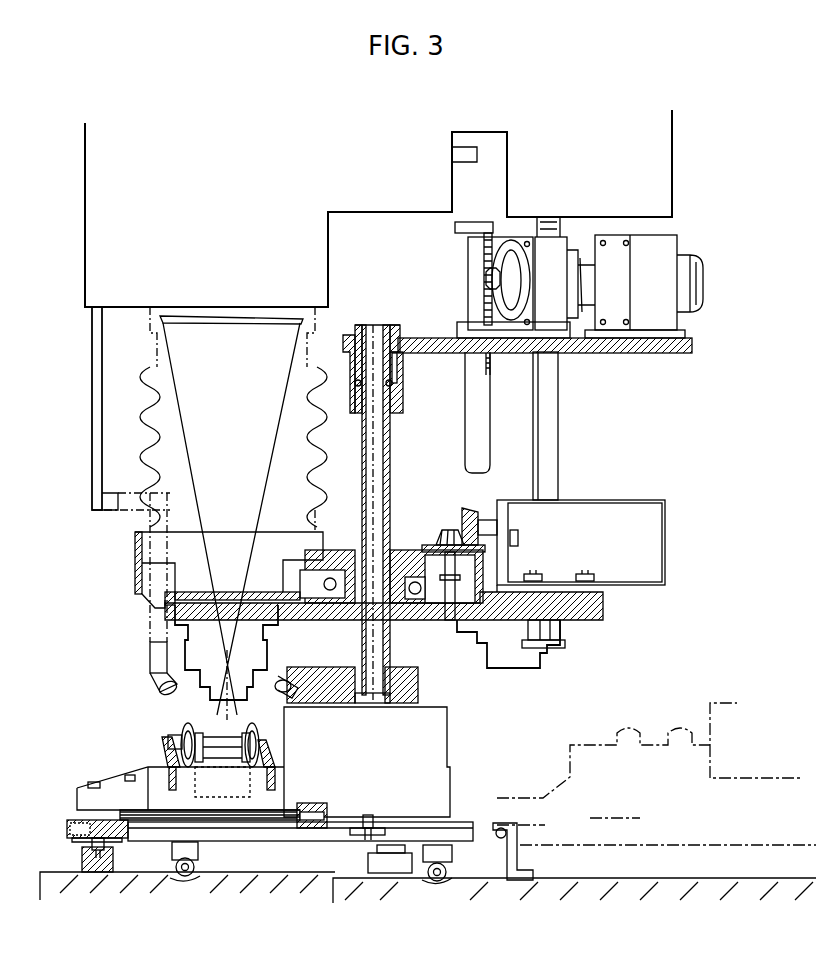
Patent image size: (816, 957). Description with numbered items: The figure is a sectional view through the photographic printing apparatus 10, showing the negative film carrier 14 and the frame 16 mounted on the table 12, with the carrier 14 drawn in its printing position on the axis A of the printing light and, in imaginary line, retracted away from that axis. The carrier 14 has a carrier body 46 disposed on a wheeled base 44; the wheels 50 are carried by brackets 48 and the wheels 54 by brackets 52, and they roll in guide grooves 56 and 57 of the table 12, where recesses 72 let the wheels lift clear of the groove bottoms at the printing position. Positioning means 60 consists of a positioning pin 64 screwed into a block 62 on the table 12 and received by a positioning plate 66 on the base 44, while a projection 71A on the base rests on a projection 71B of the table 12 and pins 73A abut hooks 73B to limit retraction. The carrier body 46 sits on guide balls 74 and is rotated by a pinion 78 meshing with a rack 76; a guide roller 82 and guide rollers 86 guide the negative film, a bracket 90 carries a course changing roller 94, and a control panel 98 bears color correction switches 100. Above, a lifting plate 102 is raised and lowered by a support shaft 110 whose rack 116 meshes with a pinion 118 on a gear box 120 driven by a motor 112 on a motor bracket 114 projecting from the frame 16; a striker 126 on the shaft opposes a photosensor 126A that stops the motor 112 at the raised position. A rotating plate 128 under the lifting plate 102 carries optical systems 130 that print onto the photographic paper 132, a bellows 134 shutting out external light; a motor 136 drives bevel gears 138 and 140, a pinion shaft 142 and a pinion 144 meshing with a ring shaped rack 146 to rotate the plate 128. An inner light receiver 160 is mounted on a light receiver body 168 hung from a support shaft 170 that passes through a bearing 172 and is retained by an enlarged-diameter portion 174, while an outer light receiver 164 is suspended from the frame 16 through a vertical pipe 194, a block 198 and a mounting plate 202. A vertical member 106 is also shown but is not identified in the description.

The photographic printing apparatus 10 is at (743, 210).
The table 12 is at (40, 885).
The negative film carrier 14 is at (473, 727).
The frame 16 is at (672, 152).
The wheeled base 44 is at (77, 798).
The carrier body 46 is at (450, 790).
The brackets 48 is at (196, 858).
The wheels 50 is at (178, 875).
The brackets 52 is at (450, 860).
The wheels 54 is at (462, 890).
The groove 56 is at (280, 841).
The groove 57 is at (548, 880).
The positioning means 60 is at (58, 852).
The block 62 is at (116, 880).
The positioning pin 64 is at (72, 840).
The positioning plate 66 is at (113, 843).
The projection 71A is at (378, 852).
The projection 71B is at (400, 874).
The recesses 72 is at (192, 882).
The pins 73A is at (67, 822).
The hooks 73B is at (520, 882).
The guide balls 74 is at (340, 797).
The rack 76 is at (372, 815).
The pinion 78 is at (352, 835).
The guide roller 82 is at (214, 733).
The guide rollers 86 is at (190, 785).
The bracket 90 is at (275, 762).
The course changing roller 94 is at (170, 732).
The control panel 98 is at (120, 774).
The color correction switches 100 is at (90, 780).
The lifting plate 102 is at (603, 606).
The column 106 is at (558, 428).
The support shaft 110 is at (465, 432).
The motor 112 is at (672, 236).
The motor bracket 114 is at (632, 354).
The rack 116 is at (484, 252).
The pinion 118 is at (500, 262).
The gear box 120 is at (560, 237).
The striker 126 is at (478, 222).
The photosensor 126A is at (477, 154).
The rotating plate 128 is at (430, 603).
The optical systems 130 is at (278, 636).
The photographic paper 132 is at (287, 316).
The bellows 134 is at (307, 453).
The motor 136 is at (630, 500).
The bevel gear 138 is at (466, 510).
The bevel gear 140 is at (436, 548).
The pinion shaft 142 is at (448, 530).
The pinion 144 is at (450, 620).
The rack 146 is at (416, 603).
The inner light receiver 160 is at (270, 692).
The outer light receiver 164 is at (152, 685).
The light receiver body 168 is at (418, 690).
The support shaft 170 is at (390, 458).
The bearing 172 is at (403, 400).
The enlarged-diameter portion 174 is at (358, 325).
The vertical pipe 194 is at (150, 652).
The block 198 is at (118, 510).
The mounting plate 202 is at (92, 470).
The axis of the printing light A is at (232, 266).